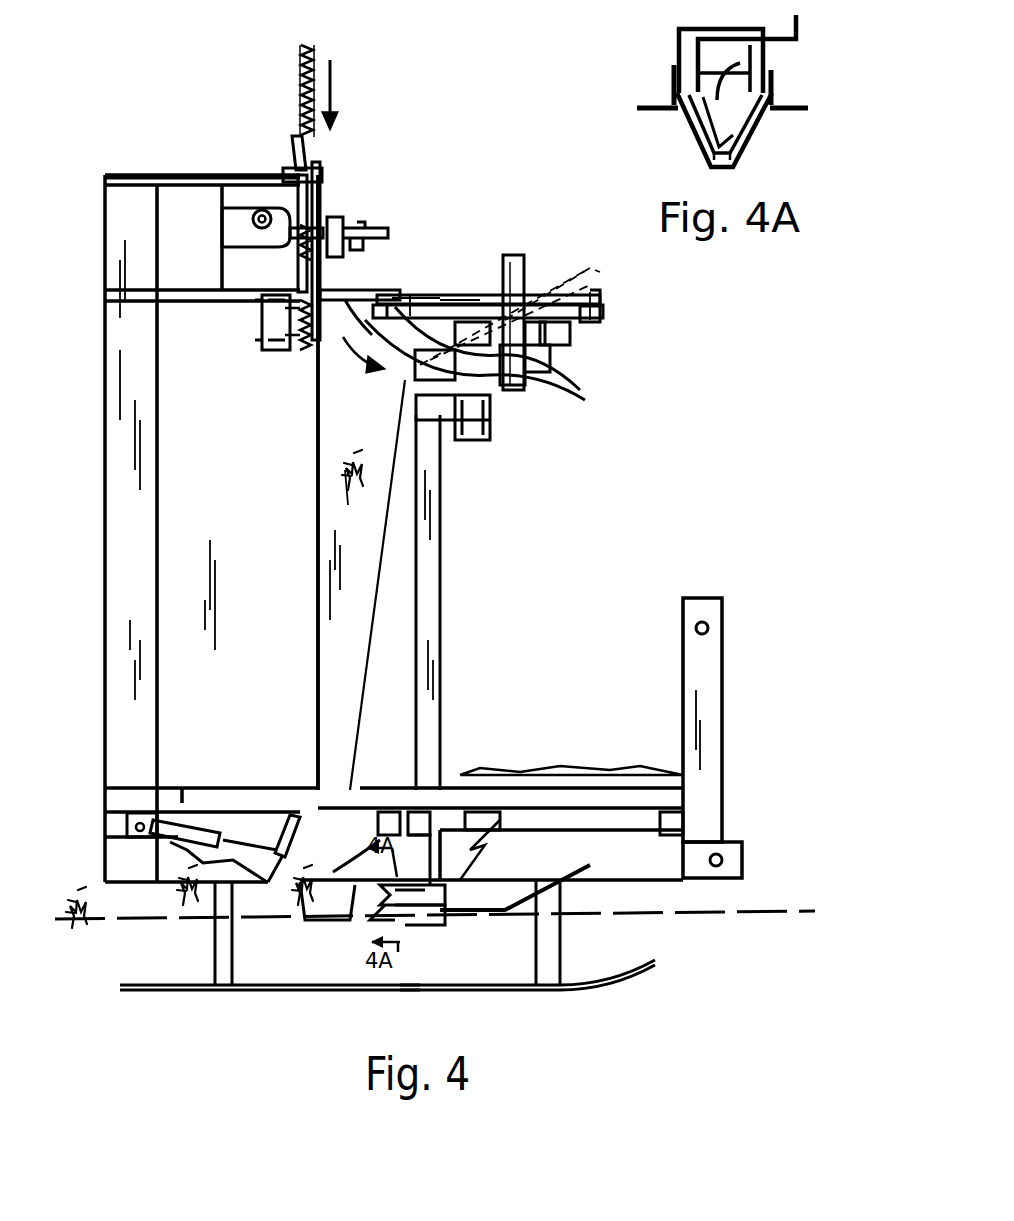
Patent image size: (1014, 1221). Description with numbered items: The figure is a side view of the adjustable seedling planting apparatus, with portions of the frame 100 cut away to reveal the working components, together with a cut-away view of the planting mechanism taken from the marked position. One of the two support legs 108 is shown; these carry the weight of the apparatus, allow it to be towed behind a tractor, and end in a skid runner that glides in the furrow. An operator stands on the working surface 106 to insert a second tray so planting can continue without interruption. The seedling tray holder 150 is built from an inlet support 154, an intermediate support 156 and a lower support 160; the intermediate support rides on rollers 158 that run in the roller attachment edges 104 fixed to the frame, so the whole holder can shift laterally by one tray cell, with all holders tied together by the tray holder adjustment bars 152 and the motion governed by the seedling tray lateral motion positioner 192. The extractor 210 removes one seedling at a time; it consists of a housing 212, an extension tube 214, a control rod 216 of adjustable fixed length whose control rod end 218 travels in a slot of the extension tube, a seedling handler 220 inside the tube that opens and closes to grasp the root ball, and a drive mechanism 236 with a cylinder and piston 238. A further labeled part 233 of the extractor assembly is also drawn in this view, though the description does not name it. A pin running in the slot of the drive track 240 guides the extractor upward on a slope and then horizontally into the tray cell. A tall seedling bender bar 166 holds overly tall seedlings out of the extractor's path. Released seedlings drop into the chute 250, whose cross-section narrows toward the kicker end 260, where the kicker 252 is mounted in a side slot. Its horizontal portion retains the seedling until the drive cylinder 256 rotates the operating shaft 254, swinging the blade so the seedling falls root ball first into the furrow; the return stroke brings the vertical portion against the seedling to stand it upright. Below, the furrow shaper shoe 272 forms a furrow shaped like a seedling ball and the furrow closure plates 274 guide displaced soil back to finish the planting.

In FIG. 4, the frame 100 is at (118, 316).
In FIG. 4, the roller attachment edges 104 is at (290, 267).
In FIG. 4, the working surface 106 is at (640, 773).
In FIG. 4, the support legs 108 is at (297, 176).
In FIG. 4, the seedling tray holder 150 is at (325, 190).
In FIG. 4, the tray holder adjustment bars 152 is at (343, 222).
In FIG. 4, the inlet support 154 is at (288, 140).
In FIG. 4, the intermediate support 156 is at (292, 150).
In FIG. 4, the rollers 158 is at (298, 203).
In FIG. 4, the lower support 160 is at (300, 385).
In FIG. 4, the tall seedling bender bar 166 is at (350, 310).
In FIG. 4, the seedling tray lateral motion positioner 192 is at (293, 212).
In FIG. 4, the extractor 210 is at (583, 320).
In FIG. 4, the housing 212 is at (607, 308).
In FIG. 4, the extension tube 214 is at (377, 300).
In FIG. 4, the control rod 216 is at (528, 352).
In FIG. 4, the control rod end 218 is at (523, 363).
In FIG. 4, the seedling handler 220 is at (473, 370).
In FIG. 4, the mounting block 233 is at (383, 303).
In FIG. 4, the drive mechanism 236 is at (383, 307).
In FIG. 4, the cylinder and piston 238 is at (595, 297).
In FIG. 4, the drive track 240 is at (383, 306).
In FIG. 4, the chute 250 is at (325, 510).
In FIG. 4A, the kicker 252 is at (735, 63).
In FIG. 4, the kicker 252 is at (333, 872).
In FIG. 4, the operating shaft 254 is at (320, 870).
In FIG. 4, the drive cylinder 256 is at (180, 830).
In FIG. 4A, the kicker end 260 is at (683, 87).
In FIG. 4, the kicker end 260 is at (352, 875).
In FIG. 4A, the furrow shaper shoe 272 is at (750, 128).
In FIG. 4, the furrow shaper shoe 272 is at (420, 903).
In FIG. 4A, the furrow closure plates 274 is at (653, 112).
In FIG. 4, the furrow closure plates 274 is at (397, 900).